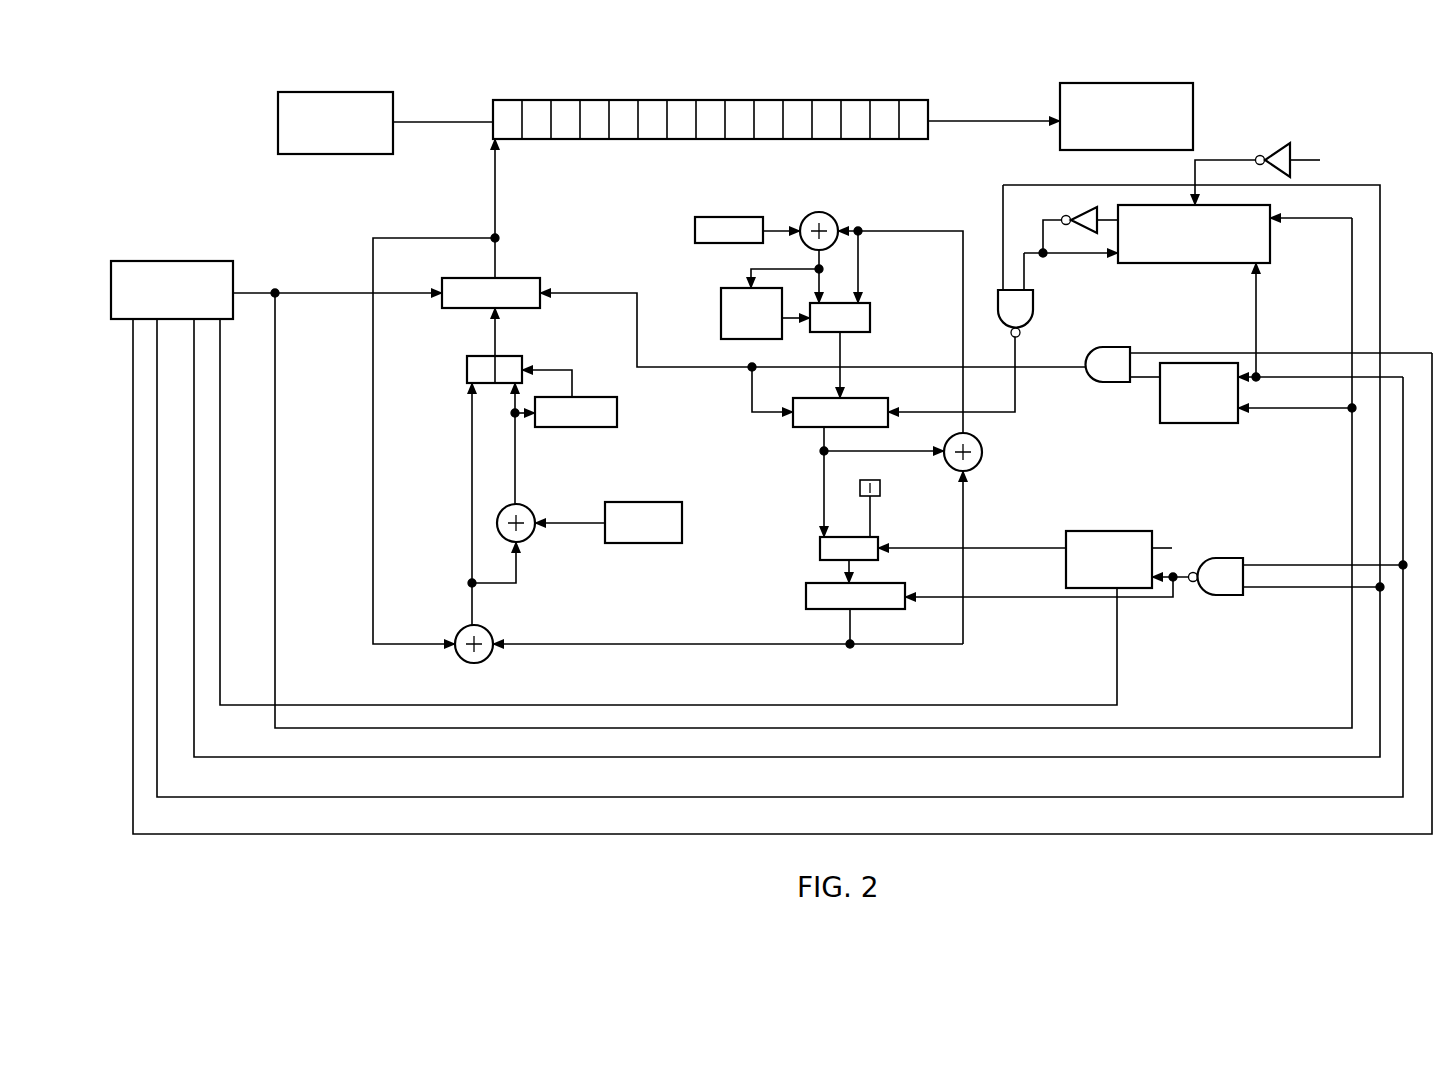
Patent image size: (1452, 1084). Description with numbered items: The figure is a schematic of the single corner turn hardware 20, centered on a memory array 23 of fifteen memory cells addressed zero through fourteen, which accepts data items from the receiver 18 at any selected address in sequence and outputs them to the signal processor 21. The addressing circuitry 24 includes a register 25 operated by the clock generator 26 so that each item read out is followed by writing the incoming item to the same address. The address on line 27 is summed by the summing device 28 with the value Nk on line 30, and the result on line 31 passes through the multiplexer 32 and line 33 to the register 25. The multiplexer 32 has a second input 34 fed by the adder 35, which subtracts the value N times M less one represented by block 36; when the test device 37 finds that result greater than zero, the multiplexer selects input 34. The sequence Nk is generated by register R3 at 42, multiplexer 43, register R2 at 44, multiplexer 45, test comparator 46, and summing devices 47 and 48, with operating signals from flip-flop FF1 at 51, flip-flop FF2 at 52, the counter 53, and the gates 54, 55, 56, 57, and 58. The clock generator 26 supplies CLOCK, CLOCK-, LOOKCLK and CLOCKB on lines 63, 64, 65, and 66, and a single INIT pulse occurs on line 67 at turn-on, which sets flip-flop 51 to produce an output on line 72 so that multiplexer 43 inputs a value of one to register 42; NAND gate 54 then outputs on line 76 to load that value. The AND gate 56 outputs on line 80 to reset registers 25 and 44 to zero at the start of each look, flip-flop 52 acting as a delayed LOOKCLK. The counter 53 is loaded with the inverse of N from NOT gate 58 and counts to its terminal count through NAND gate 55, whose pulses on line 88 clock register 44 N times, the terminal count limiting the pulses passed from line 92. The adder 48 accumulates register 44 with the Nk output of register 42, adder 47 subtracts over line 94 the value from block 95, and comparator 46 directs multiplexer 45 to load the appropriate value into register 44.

The receiver 18 is at (278, 146).
The corner turn hardware 20 is at (742, 47).
The signal processor 21 is at (1057, 143).
The memory array 23 is at (775, 100).
The addressing circuitry 24 is at (968, 135).
The register 25 is at (513, 278).
The clock generator 26 is at (203, 261).
The line 27 is at (373, 612).
The summing device 28 is at (458, 632).
The line 30 is at (572, 644).
The line 31 is at (472, 497).
The multiplexer 32 is at (520, 358).
The line 33 is at (495, 338).
The second input 34 is at (514, 440).
The adder 35 is at (502, 512).
The block 36 is at (650, 502).
The test device 37 is at (612, 397).
The register R3 42 is at (880, 583).
The multiplexer 43 is at (820, 548).
The register R2 44 is at (812, 398).
The multiplexer 45 is at (870, 308).
The test comparator 46 is at (721, 293).
The summing device 47 is at (812, 212).
The summing device 48 is at (980, 450).
The flip-flop FF1 51 is at (1100, 531).
The flip-flop FF2 52 is at (1160, 418).
The counter 53 is at (1272, 240).
The NAND gate 54 is at (1220, 558).
The NAND gate 55 is at (1033, 299).
The AND gate 56 is at (1095, 384).
The gate 57 is at (1085, 210).
The NOT gate 58 is at (1277, 144).
The line 63 is at (912, 728).
The line 64 is at (926, 757).
The line 65 is at (901, 797).
The line 66 is at (914, 834).
The line 67 is at (892, 705).
The line 72 is at (1005, 549).
The line 76 is at (976, 597).
The line 80 is at (1050, 367).
The line 88 is at (1012, 408).
The line 92 is at (1026, 252).
The line 94 is at (933, 231).
The block 95 is at (718, 217).